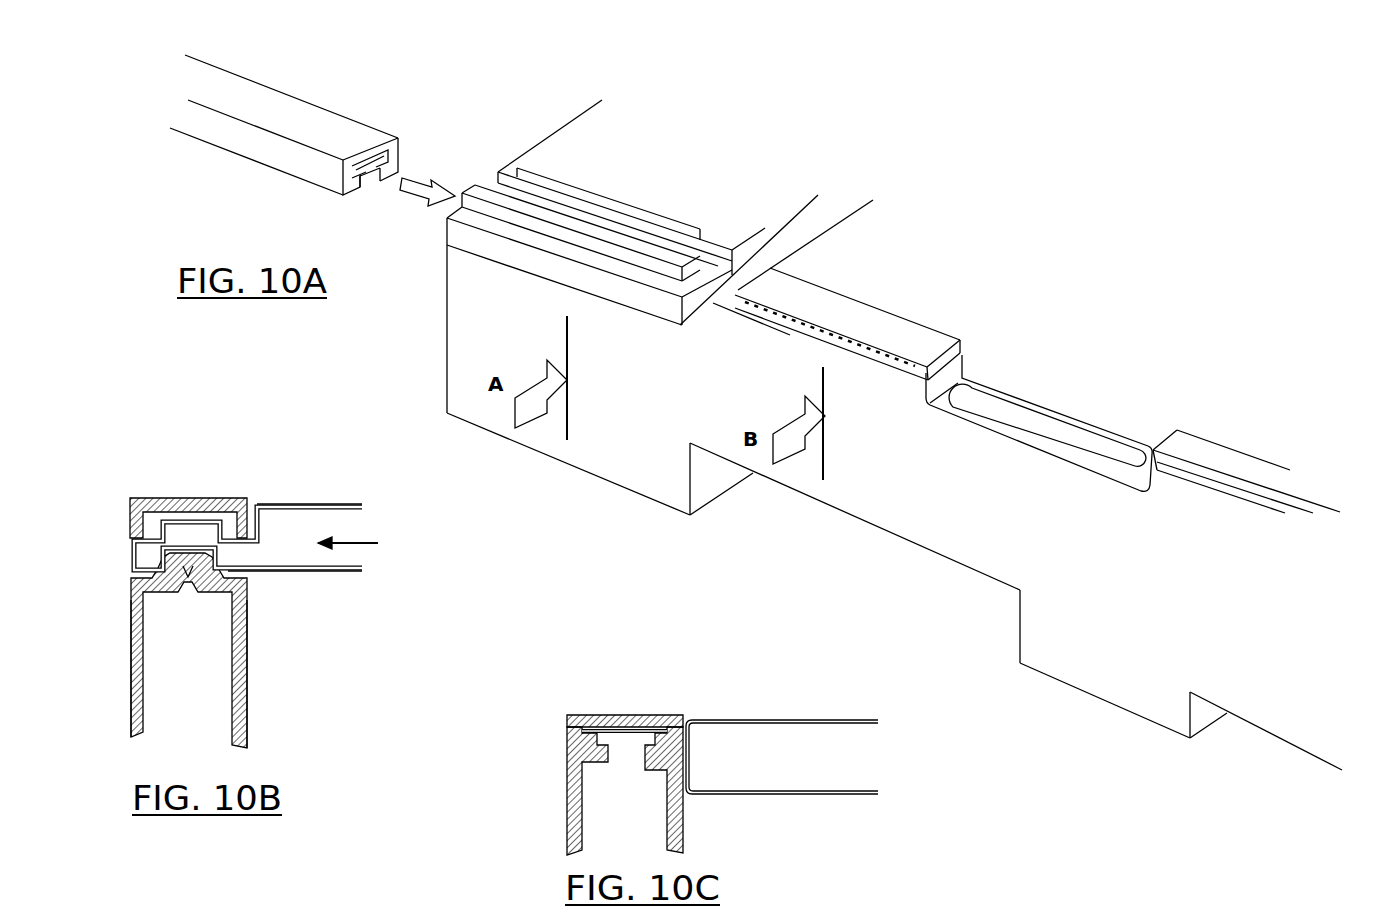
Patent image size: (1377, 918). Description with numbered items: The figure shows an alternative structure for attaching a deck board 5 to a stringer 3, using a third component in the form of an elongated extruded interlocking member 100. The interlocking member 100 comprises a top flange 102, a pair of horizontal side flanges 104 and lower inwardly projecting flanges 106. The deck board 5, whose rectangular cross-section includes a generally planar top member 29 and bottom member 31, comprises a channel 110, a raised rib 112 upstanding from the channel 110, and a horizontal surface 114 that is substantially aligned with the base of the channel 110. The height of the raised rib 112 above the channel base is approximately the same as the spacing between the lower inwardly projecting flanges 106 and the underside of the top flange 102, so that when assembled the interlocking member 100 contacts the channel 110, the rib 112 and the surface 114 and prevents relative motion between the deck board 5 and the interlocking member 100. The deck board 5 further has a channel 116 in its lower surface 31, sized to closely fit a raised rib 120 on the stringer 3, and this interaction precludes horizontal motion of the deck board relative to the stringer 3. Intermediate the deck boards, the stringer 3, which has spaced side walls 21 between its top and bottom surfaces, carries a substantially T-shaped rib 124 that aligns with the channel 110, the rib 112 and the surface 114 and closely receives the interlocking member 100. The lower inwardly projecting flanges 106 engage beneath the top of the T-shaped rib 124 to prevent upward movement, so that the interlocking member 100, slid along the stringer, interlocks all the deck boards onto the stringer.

In FIG. 10A, the interlocking member 100 is at (382, 105).
In FIG. 10A, the top flange 102 is at (298, 105).
In FIG. 10A, the horizontal side flanges 104 is at (400, 140).
In FIG. 10A, the lower inwardly projecting flanges 106 is at (400, 177).
In FIG. 10A, the deck board 5 is at (573, 137).
In FIG. 10A, the raised rib 112 is at (517, 168).
In FIG. 10A, the channel 110 is at (630, 220).
In FIG. 10A, the horizontal surface 114 is at (447, 240).
In FIG. 10A, the top member 29 is at (744, 197).
In FIG. 10A, the T-shaped rib 124 is at (890, 320).
In FIG. 10A, the raised rib 120 is at (1060, 417).
In FIG. 10B, the raised rib 120 is at (235, 565).
In FIG. 10B, the channel 116 is at (130, 578).
In FIG. 10B, the side walls 21 is at (130, 645).
In FIG. 10B, the stringer 3 is at (130, 690).
In FIG. 10B, the bottom member 31 is at (335, 570).